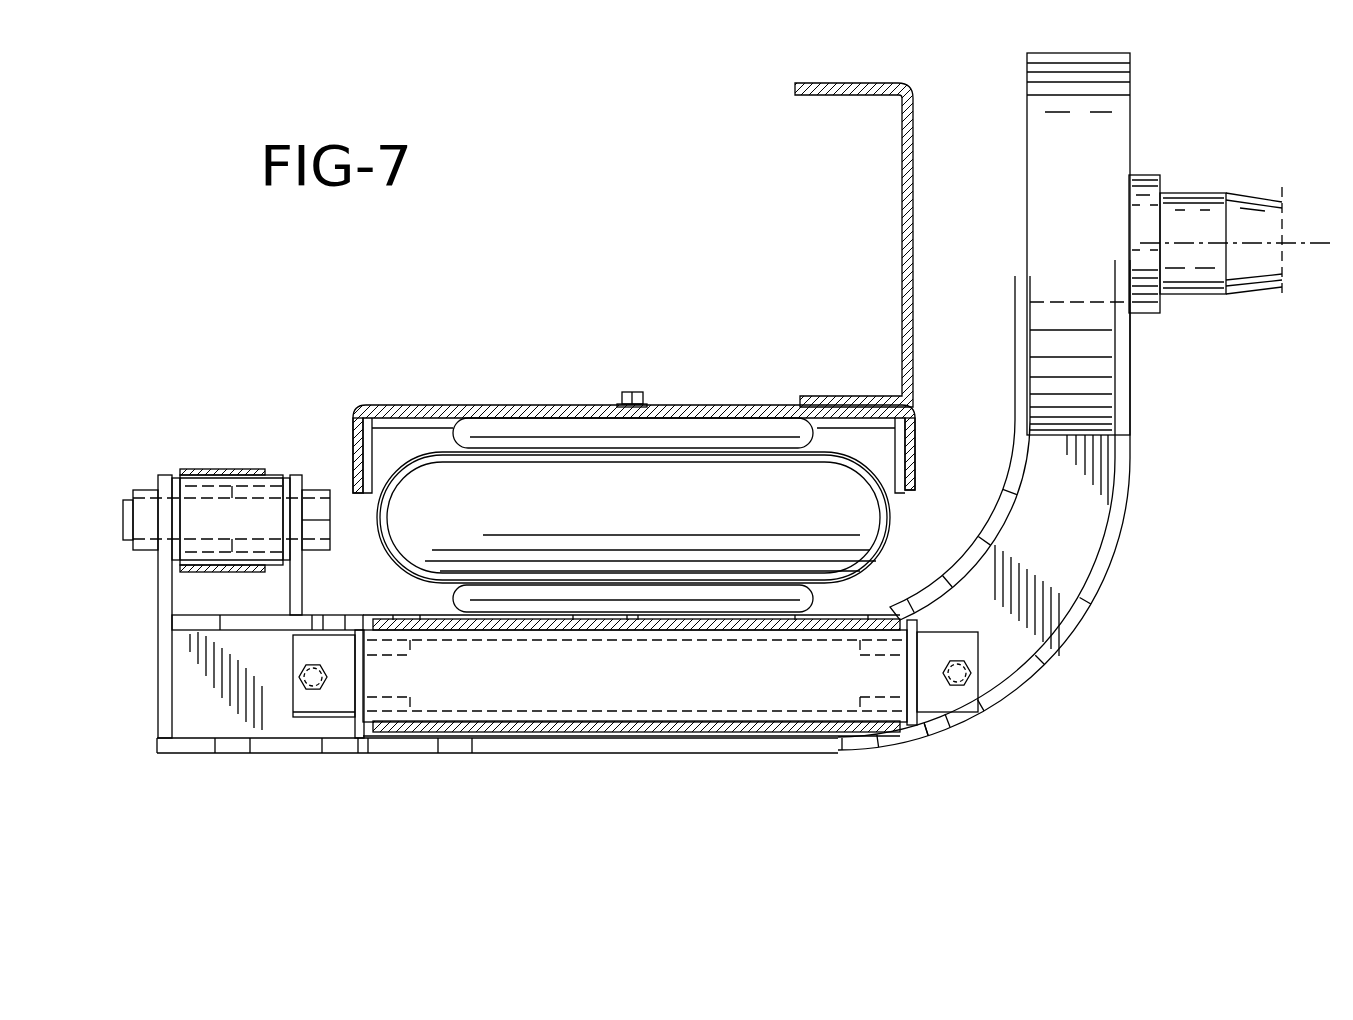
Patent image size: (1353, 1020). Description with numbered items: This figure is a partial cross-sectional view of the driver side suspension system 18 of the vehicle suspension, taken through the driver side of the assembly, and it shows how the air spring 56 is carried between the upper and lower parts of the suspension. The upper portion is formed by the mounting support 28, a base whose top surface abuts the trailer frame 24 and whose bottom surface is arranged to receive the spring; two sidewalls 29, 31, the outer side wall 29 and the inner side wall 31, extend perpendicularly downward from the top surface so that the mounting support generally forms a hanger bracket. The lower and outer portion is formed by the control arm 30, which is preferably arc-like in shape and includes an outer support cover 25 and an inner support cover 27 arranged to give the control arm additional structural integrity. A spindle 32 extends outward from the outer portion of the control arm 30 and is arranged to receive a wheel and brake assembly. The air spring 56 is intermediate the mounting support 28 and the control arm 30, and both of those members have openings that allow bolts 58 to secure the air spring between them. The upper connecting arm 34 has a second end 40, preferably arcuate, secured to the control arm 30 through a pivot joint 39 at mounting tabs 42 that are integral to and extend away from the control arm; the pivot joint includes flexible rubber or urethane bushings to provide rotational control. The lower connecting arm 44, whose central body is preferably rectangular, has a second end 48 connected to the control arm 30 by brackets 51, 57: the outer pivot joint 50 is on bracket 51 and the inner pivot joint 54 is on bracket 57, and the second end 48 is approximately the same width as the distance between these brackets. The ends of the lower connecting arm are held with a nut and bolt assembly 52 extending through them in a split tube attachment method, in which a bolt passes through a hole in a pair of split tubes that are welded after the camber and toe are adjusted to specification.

The driver side suspension system 18 is at (472, 310).
The frame 24 is at (900, 200).
The outer support cover 25 is at (718, 745).
The inner support cover 27 is at (343, 620).
The mounting support 28 is at (415, 405).
The sidewall 29 is at (917, 457).
The control arm 30 is at (1100, 610).
The sidewall 31 is at (352, 462).
The spindle 32 is at (1200, 193).
The upper connecting arm 34 is at (218, 465).
The pivot joint 39 is at (120, 518).
The second end 40 is at (240, 510).
The mounting tabs 42 is at (160, 583).
The lower connecting arm 44 is at (618, 735).
The second end 48 is at (522, 677).
The outer pivot joint 50 is at (923, 720).
The bracket 51 is at (908, 683).
The nut and bolt assembly 52 is at (290, 705).
The inner pivot joint 54 is at (350, 707).
The air spring 56 is at (555, 487).
The bracket 57 is at (365, 677).
The bolts 58 is at (632, 392).